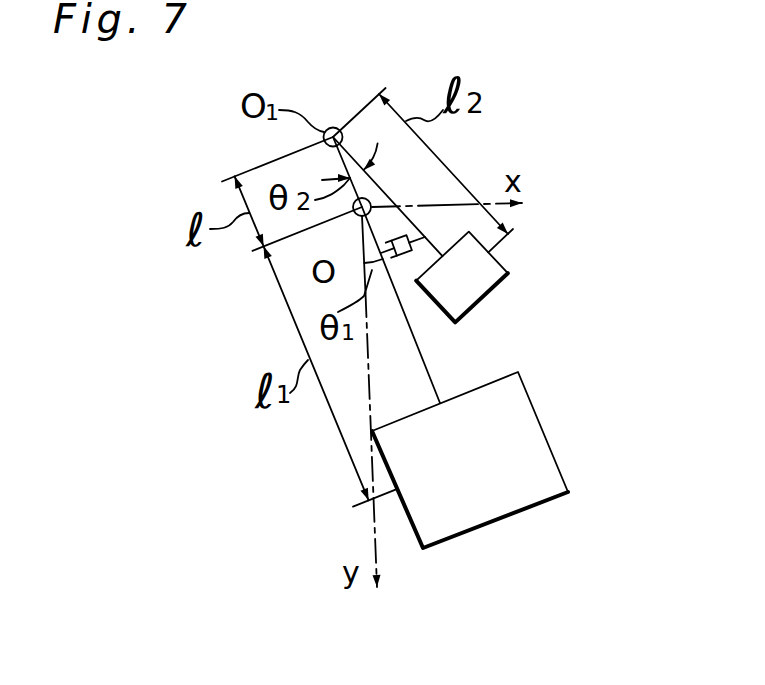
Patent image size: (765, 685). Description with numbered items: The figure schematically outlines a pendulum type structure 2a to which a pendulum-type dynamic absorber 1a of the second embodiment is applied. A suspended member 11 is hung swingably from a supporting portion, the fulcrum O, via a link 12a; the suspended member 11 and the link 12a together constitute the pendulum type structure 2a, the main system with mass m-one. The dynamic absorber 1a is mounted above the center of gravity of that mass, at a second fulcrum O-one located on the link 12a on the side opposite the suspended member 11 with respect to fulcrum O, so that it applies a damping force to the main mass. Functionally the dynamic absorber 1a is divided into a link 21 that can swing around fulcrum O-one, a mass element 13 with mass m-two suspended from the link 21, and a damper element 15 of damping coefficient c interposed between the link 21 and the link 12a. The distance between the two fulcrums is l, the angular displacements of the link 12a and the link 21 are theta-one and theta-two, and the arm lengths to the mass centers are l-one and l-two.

The dynamic absorber 1a is at (487, 218).
The pendulum type structure 2a is at (501, 342).
The suspended member 11 is at (553, 463).
The link 12a is at (423, 355).
The mass element 13 is at (508, 273).
The damper element 15 is at (428, 238).
The link 21 is at (385, 193).